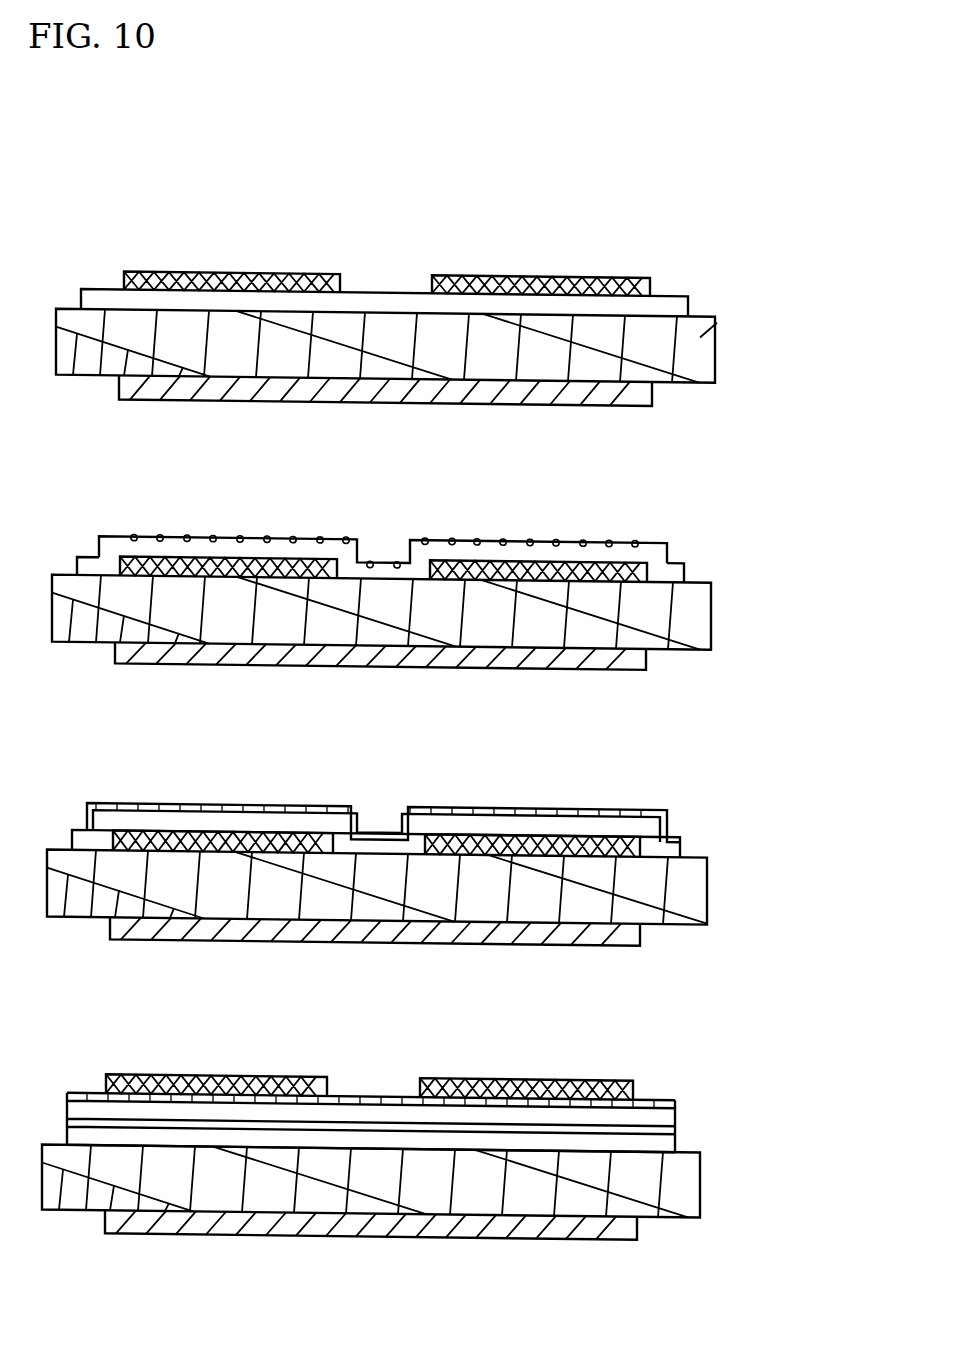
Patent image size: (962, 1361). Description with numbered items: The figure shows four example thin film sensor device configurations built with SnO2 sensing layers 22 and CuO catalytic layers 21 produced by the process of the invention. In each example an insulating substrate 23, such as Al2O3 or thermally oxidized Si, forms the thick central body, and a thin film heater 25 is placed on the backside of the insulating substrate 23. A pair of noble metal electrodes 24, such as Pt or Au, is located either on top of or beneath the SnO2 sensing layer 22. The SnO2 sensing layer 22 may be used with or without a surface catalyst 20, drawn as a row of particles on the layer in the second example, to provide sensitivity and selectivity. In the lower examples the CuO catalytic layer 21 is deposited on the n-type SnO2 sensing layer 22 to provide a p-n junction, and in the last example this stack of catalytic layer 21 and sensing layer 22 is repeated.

The surface catalyst 20 is at (650, 541).
The CuO catalytic layer 21 is at (650, 808).
The SnO2 sensing layer 22 is at (669, 303).
The insulating substrate 23 is at (700, 337).
The noble metal electrodes 24 is at (620, 273).
The thin film heater 25 is at (655, 394).